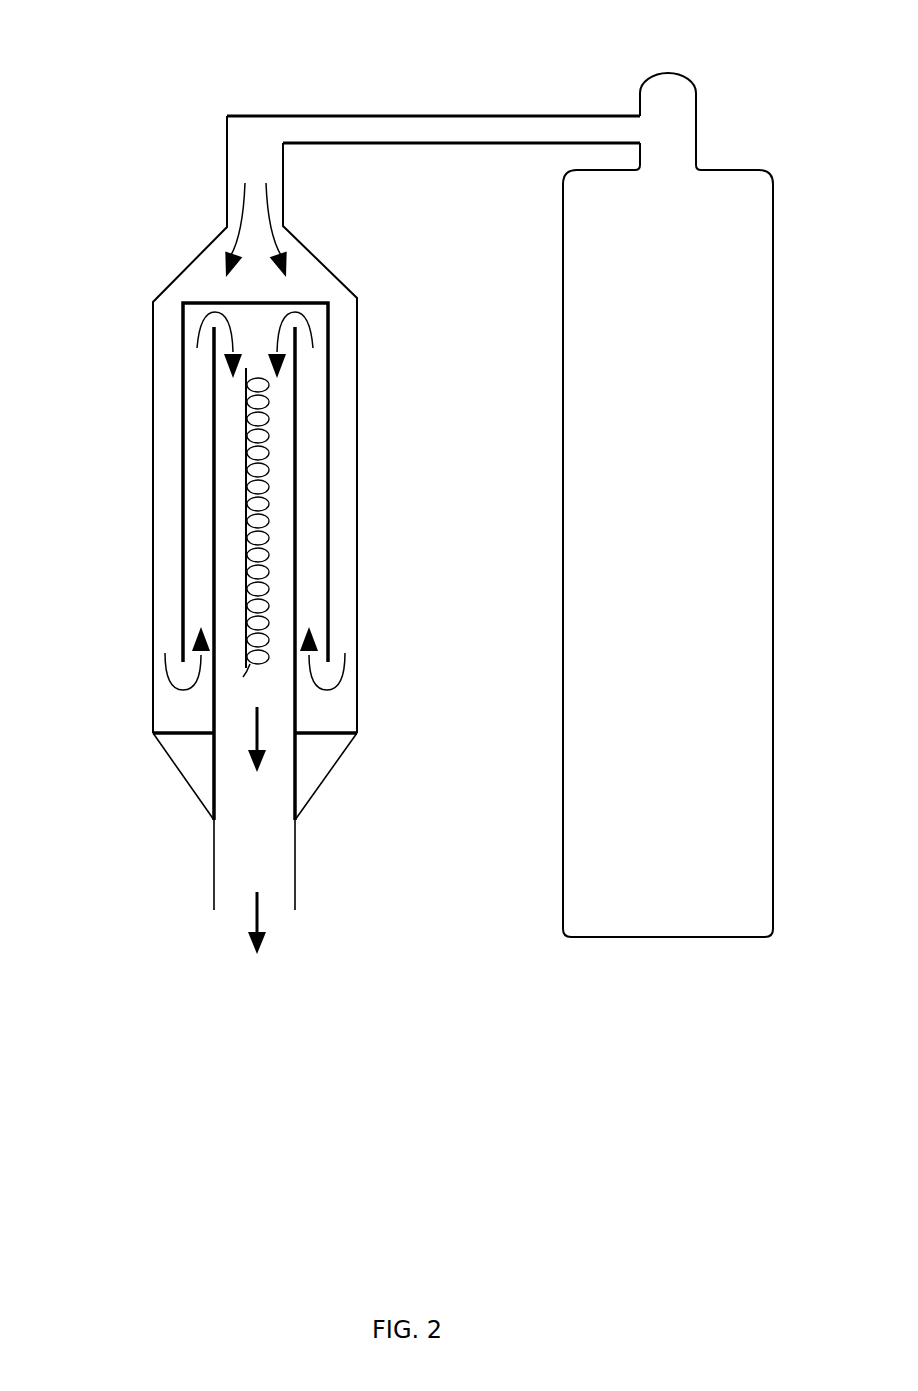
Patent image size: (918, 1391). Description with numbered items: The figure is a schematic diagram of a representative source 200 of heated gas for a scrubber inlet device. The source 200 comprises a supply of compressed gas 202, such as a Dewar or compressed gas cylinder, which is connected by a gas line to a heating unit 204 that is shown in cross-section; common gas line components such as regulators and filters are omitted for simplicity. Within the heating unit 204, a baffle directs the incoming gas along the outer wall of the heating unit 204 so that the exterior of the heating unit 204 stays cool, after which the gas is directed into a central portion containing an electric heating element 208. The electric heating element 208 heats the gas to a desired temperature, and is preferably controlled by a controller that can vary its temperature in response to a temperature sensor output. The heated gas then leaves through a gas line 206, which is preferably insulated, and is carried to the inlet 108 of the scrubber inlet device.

The source of heated gas 200 is at (362, 36).
The supply of compressed gas 202 is at (692, 442).
The heating unit 204 is at (357, 347).
The gas line 206 is at (295, 865).
The electric heating element 208 is at (245, 540).
The inlet 108 is at (254, 1004).